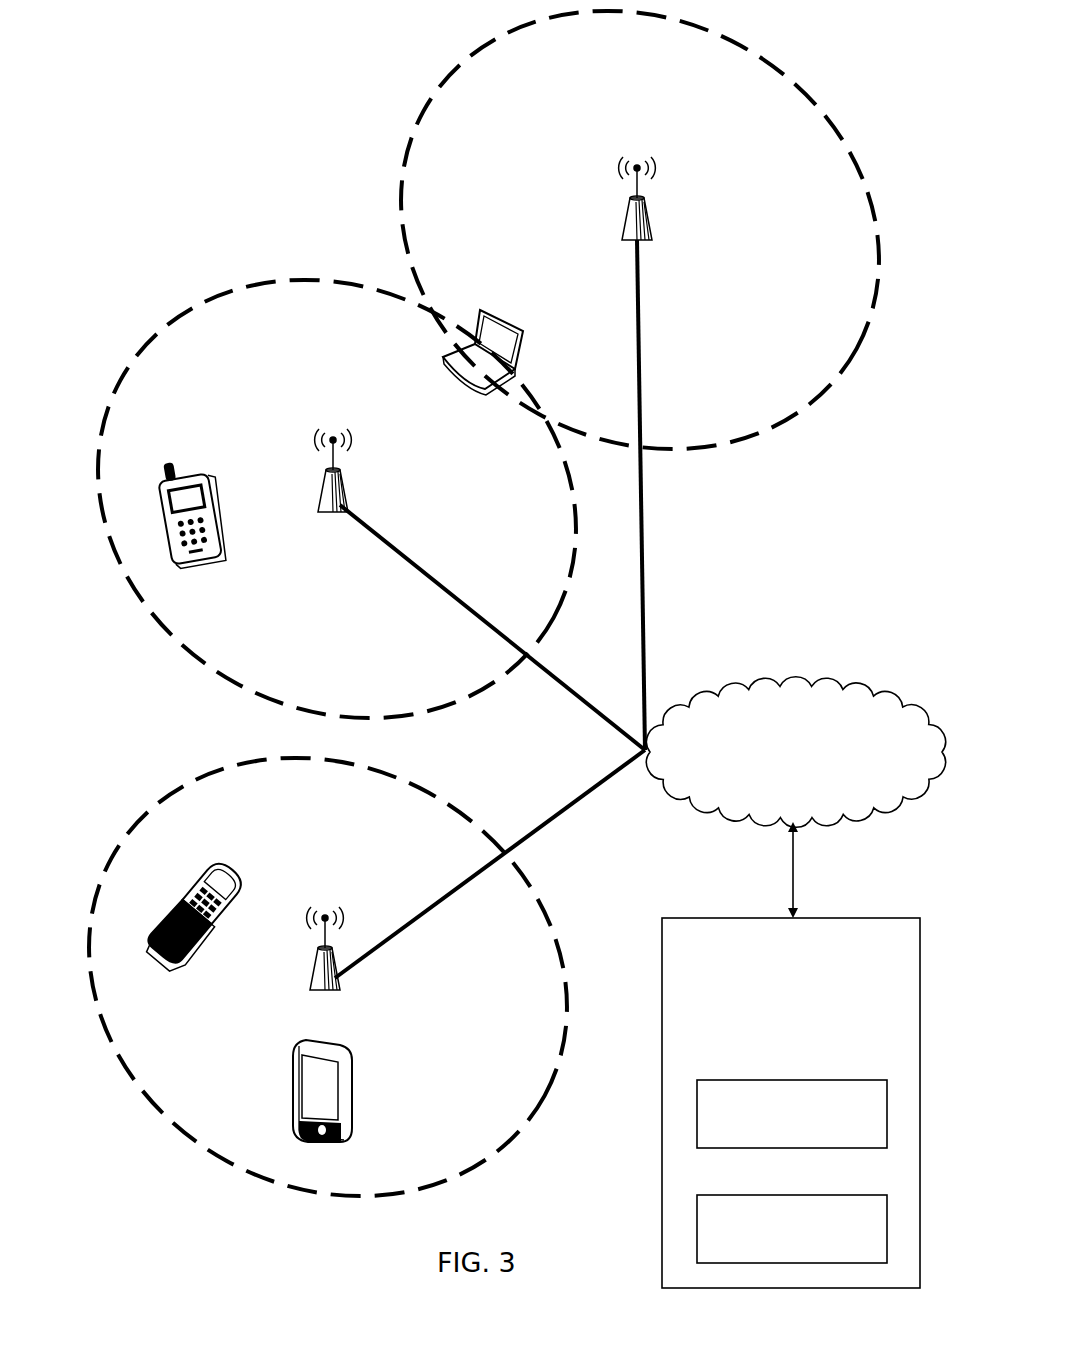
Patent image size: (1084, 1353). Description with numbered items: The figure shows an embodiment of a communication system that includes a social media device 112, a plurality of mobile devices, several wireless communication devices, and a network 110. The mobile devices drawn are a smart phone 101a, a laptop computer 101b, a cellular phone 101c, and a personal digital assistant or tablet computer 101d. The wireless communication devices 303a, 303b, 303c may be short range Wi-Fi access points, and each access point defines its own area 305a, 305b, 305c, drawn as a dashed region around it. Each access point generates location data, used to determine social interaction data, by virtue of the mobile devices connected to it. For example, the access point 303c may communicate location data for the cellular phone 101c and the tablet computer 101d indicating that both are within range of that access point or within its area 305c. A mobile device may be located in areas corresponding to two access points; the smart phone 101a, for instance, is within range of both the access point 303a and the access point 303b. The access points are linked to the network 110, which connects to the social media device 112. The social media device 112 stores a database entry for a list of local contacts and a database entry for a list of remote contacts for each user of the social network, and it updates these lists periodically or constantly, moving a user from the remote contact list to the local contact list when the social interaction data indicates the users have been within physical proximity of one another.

The smart phone 101a is at (177, 462).
The laptop computer 101b is at (480, 310).
The cellular phone 101c is at (218, 870).
The personal digital assistant or tablet computer 101d is at (352, 1088).
The wireless communication device 303a is at (320, 490).
The wireless communication device 303b is at (626, 216).
The wireless communication device 303c is at (312, 968).
The area 305a is at (468, 697).
The area 305b is at (848, 362).
The area 305c is at (180, 1128).
The network 110 is at (795, 752).
The social media device 112 is at (662, 920).